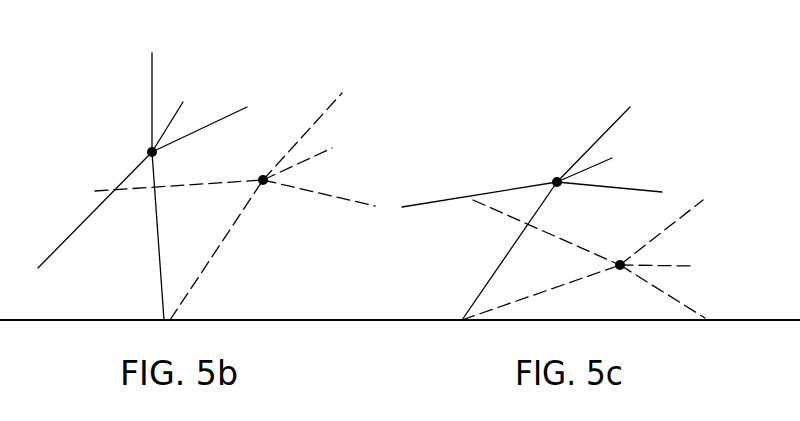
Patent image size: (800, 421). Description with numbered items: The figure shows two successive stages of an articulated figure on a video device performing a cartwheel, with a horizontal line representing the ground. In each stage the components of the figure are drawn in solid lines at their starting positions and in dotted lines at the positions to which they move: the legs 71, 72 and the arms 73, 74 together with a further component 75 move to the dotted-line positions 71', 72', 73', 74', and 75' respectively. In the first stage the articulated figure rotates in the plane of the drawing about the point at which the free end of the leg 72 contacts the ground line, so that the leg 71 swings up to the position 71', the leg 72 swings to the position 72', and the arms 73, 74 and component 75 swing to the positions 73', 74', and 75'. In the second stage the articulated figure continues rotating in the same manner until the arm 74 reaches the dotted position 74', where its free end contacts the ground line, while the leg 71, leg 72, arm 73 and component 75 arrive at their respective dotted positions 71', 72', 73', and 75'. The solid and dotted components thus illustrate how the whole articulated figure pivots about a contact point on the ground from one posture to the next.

In FIG. 5B, the leg 71 is at (87, 210).
In FIG. 5C, the leg 71 is at (479, 183).
In FIG. 5B, the leg (moved position) 71' is at (169, 165).
In FIG. 5C, the leg (moved position) 71' is at (546, 204).
In FIG. 5B, the leg 72 is at (136, 236).
In FIG. 5C, the leg 72 is at (495, 251).
In FIG. 5B, the leg (moved position) 72' is at (217, 250).
In FIG. 5C, the leg (moved position) 72' is at (541, 288).
In FIG. 5B, the arm 73 is at (128, 102).
In FIG. 5C, the arm 73 is at (592, 144).
In FIG. 5B, the arm (moved position) 73' is at (302, 132).
In FIG. 5C, the arm (moved position) 73' is at (676, 210).
In FIG. 5B, the arm 74 is at (199, 134).
In FIG. 5C, the arm 74 is at (609, 203).
In FIG. 5B, the arm (moved position) 74' is at (319, 215).
In FIG. 5C, the arm (moved position) 74' is at (683, 291).
In FIG. 5B, the component 75 is at (193, 119).
In FIG. 5C, the component 75 is at (610, 169).
In FIG. 5B, the component (moved position) 75' is at (312, 167).
In FIG. 5C, the component (moved position) 75' is at (678, 247).